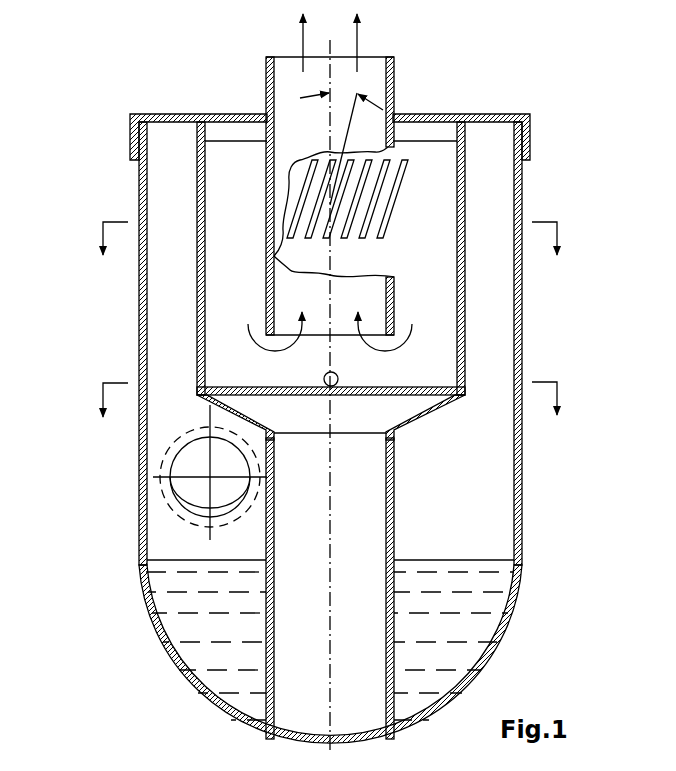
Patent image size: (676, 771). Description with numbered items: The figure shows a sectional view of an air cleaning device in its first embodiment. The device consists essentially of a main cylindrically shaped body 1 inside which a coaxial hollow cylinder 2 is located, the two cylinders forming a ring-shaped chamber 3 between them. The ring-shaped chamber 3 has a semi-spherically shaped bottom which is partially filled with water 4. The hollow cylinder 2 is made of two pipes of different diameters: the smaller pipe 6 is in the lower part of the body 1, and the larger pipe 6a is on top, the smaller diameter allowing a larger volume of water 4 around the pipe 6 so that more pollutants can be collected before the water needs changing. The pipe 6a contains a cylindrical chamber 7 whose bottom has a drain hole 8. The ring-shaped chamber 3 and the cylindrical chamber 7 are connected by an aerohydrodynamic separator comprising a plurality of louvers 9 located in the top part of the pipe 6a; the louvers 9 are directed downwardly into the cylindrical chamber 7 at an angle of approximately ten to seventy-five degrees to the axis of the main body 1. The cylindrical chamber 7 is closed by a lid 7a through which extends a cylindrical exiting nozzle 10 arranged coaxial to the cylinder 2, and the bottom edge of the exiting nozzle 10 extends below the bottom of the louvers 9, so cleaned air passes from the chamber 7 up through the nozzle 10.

The main body 1 is at (140, 220).
The hollow cylinder 2 is at (325, 238).
The ring-shaped chamber 3 is at (327, 399).
The water 4 is at (119, 462).
The smaller pipe 6 is at (267, 540).
The larger pipe 6a is at (195, 200).
The cylindrical chamber 7 is at (438, 308).
The lid 7a is at (428, 114).
The drain hole 8 is at (324, 380).
The louvers 9 is at (307, 157).
The exiting nozzle 10 is at (266, 195).